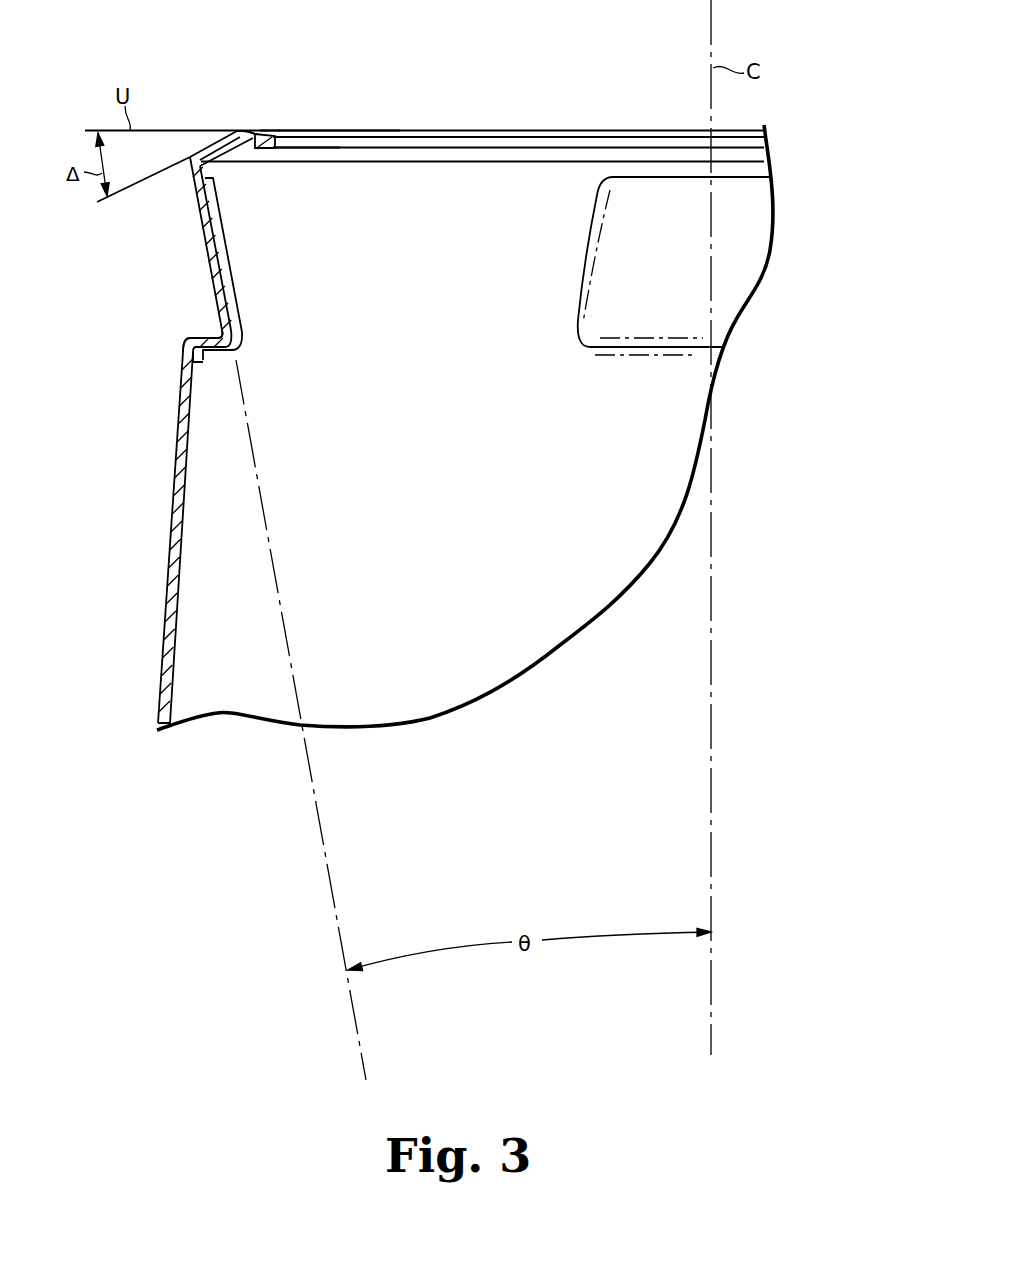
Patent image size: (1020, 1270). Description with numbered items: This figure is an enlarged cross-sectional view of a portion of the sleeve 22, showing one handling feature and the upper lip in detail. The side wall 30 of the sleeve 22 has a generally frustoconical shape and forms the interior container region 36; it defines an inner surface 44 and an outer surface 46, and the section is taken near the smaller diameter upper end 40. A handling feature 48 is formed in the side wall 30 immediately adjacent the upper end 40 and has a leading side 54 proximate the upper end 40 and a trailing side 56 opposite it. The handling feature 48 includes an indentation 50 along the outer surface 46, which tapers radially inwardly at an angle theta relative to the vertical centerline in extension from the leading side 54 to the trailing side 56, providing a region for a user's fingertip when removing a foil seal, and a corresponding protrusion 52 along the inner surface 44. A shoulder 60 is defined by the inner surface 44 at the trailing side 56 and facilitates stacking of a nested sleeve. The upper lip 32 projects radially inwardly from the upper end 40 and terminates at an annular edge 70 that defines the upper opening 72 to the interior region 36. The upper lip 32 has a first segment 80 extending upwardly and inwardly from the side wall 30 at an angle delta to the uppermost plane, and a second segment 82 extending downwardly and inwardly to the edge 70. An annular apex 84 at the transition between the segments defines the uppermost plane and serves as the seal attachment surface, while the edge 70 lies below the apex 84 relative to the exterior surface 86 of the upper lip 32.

The sleeve 22 is at (533, 49).
The side wall 30 is at (152, 705).
The upper lip 32 is at (241, 125).
The interior container region 36 is at (572, 566).
The upper end 40 is at (193, 165).
The inner surface 44 is at (172, 682).
The outer surface 46 is at (165, 642).
The handling feature 48 is at (180, 305).
The indentation 50 is at (205, 286).
The protrusion 52 is at (231, 258).
The leading side 54 is at (200, 184).
The trailing side 56 is at (190, 345).
The shoulder 60 is at (205, 362).
The annular edge 70 is at (300, 148).
The upper opening 72 is at (610, 146).
The first segment 80 is at (213, 150).
The second segment 82 is at (256, 150).
The annular apex 84 is at (250, 128).
The exterior surface 86 is at (328, 130).